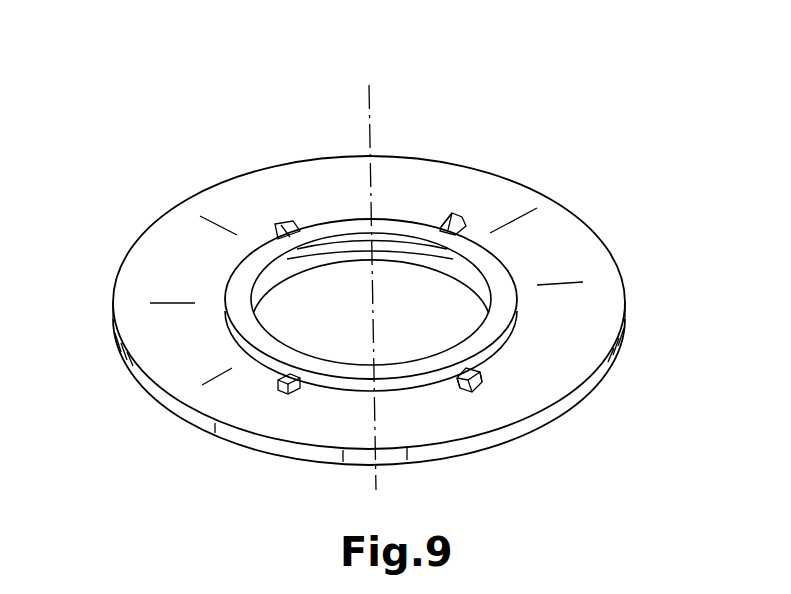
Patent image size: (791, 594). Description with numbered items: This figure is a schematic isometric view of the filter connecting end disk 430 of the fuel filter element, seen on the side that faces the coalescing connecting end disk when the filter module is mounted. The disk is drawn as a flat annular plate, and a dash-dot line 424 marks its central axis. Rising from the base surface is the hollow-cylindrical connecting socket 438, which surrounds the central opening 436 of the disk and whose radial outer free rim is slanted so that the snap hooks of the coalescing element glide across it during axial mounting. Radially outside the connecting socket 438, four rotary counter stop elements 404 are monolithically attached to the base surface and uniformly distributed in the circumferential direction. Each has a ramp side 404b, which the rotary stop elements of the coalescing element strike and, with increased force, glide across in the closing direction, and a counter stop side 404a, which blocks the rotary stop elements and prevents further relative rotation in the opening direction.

The filter connecting end disk 430 is at (356, 261).
The central axis 424 is at (360, 118).
The collar ring 436 is at (495, 319).
The connecting socket 438 is at (400, 224).
The rotary counter stop elements 404 is at (279, 223).
The counter stop sides 404a is at (496, 384).
The ramp sides 404b is at (470, 212).